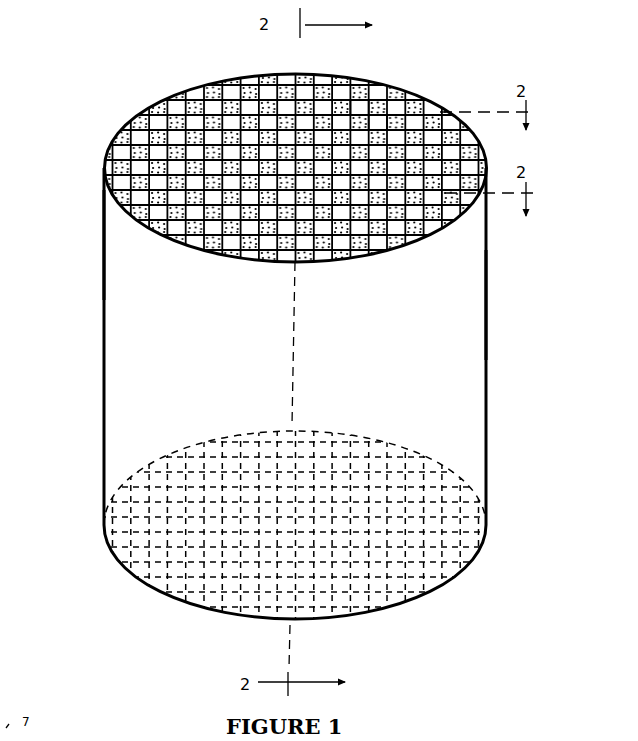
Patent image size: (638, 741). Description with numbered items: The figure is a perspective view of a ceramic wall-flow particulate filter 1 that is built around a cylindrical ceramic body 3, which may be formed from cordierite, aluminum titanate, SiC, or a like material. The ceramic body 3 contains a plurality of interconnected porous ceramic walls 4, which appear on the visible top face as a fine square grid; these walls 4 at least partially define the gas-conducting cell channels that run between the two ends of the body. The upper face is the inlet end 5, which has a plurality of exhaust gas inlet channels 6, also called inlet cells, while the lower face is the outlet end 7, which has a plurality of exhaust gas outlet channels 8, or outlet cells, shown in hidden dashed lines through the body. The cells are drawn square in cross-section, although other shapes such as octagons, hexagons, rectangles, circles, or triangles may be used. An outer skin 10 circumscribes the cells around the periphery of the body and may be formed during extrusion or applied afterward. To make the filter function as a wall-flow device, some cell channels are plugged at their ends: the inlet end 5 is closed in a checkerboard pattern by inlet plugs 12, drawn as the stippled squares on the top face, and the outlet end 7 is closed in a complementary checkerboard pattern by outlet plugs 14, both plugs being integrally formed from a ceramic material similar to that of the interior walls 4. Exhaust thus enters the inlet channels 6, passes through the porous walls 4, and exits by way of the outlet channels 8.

The particulate filter 1 is at (372, 362).
The ceramic body 3 is at (92, 210).
The porous ceramic walls 4 is at (430, 118).
The inlet end 5 is at (183, 90).
The exhaust gas inlet channels 6 is at (377, 127).
The outlet end 7 is at (145, 585).
The exhaust gas outlet channels 8 is at (380, 606).
The outer skin 10 is at (462, 318).
The inlet plugs 12 is at (155, 135).
The outlet plugs 14 is at (428, 588).